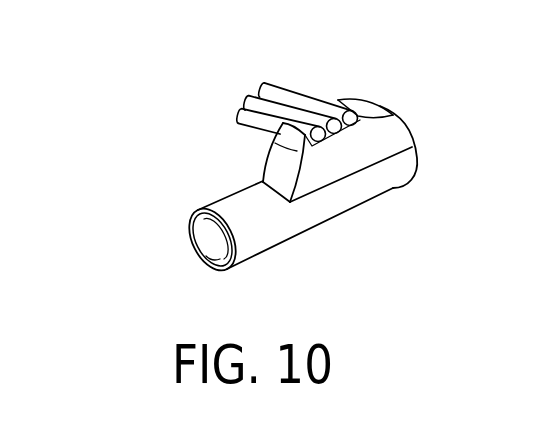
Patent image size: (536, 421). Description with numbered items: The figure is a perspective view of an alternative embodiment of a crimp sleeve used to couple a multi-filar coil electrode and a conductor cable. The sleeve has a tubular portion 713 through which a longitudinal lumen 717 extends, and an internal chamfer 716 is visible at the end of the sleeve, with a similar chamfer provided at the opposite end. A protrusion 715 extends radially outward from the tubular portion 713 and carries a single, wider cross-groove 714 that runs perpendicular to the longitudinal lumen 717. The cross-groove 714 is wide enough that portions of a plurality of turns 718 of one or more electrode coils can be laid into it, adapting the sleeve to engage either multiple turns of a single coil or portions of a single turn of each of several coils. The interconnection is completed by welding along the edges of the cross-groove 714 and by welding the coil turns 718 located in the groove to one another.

The tubular portion 713 is at (267, 246).
The cross-groove 714 is at (390, 113).
The protrusion 715 is at (392, 138).
The internal chamfer 716 is at (204, 265).
The longitudinal lumen 717 is at (217, 237).
The turns 718 is at (278, 92).